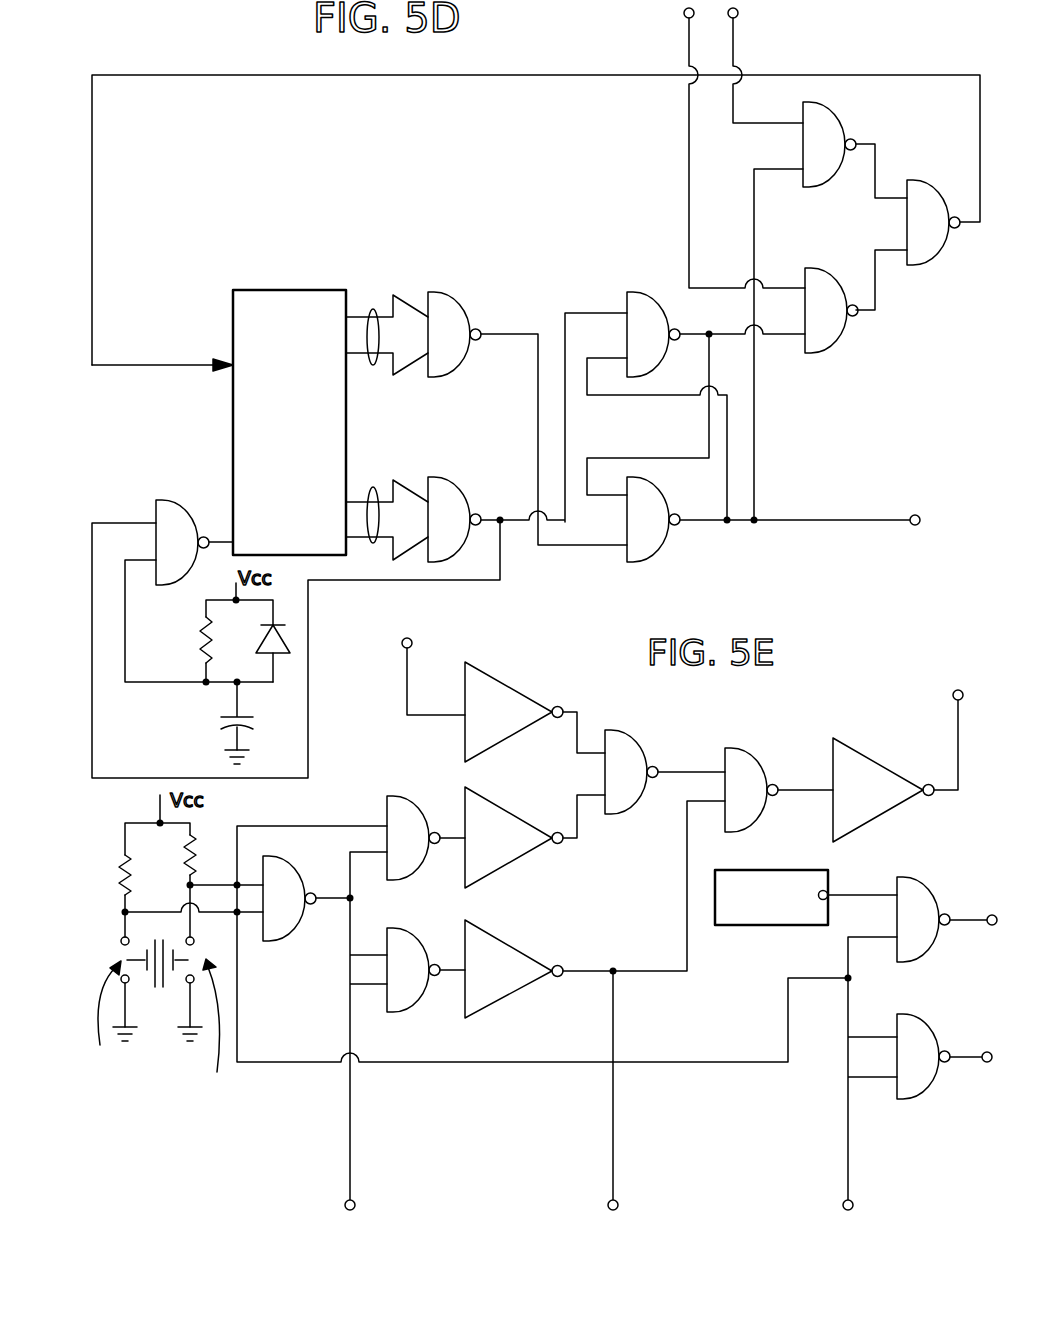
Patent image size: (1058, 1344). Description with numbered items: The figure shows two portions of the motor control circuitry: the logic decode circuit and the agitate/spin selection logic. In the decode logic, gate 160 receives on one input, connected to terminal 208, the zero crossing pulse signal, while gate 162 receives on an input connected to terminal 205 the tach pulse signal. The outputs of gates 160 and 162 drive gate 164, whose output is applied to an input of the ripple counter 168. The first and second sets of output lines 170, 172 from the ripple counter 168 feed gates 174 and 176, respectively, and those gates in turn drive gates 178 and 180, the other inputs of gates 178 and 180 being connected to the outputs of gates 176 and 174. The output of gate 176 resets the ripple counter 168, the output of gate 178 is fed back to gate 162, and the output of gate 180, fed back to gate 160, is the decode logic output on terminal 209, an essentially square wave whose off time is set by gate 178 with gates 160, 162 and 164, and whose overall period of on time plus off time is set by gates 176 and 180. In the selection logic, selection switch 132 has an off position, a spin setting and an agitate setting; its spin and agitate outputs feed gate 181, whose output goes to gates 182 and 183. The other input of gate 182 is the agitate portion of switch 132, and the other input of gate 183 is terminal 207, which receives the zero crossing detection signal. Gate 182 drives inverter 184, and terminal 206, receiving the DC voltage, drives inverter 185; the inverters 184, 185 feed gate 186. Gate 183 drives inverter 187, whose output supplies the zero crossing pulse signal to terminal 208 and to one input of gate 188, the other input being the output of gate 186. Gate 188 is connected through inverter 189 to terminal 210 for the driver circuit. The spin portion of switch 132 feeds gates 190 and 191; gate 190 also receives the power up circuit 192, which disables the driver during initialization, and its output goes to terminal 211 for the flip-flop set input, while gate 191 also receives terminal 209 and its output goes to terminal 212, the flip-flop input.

In FIG. 5E, the selection switch 132 is at (160, 937).
In FIG. 5D, the gate 160 is at (834, 124).
In FIG. 5D, the gate 162 is at (833, 346).
In FIG. 5D, the gate 164 is at (936, 243).
In FIG. 5D, the ripple counter 168 is at (309, 288).
In FIG. 5D, the first set of output lines 170 is at (372, 303).
In FIG. 5D, the second set of output lines 172 is at (372, 487).
In FIG. 5D, the gate 174 is at (460, 296).
In FIG. 5D, the gate 176 is at (458, 484).
In FIG. 5D, the gate 178 is at (646, 292).
In FIG. 5D, the gate 180 is at (664, 531).
In FIG. 5E, the gate 181 is at (295, 874).
In FIG. 5E, the gate 182 is at (413, 810).
In FIG. 5E, the gate 183 is at (416, 943).
In FIG. 5E, the inverter 184 is at (517, 815).
In FIG. 5E, the inverter 185 is at (499, 681).
In FIG. 5E, the gate 186 is at (647, 731).
In FIG. 5E, the inverter 187 is at (516, 947).
In FIG. 5E, the gate 188 is at (761, 762).
In FIG. 5E, the inverter 189 is at (892, 752).
In FIG. 5E, the gate 190 is at (922, 882).
In FIG. 5E, the gate 191 is at (920, 1026).
In FIG. 5E, the power up circuit 192 is at (830, 882).
In FIG. 5D, the terminal 205 is at (682, 17).
In FIG. 5E, the terminal 206 is at (412, 647).
In FIG. 5E, the terminal 207 is at (354, 1201).
In FIG. 5D, the terminal 208 is at (738, 17).
In FIG. 5E, the terminal 208 is at (617, 1201).
In FIG. 5D, the terminal 209 is at (920, 515).
In FIG. 5E, the terminal 209 is at (853, 1204).
In FIG. 5E, the terminal 210 is at (953, 692).
In FIG. 5E, the terminal 211 is at (992, 915).
In FIG. 5E, the terminal 212 is at (985, 1052).